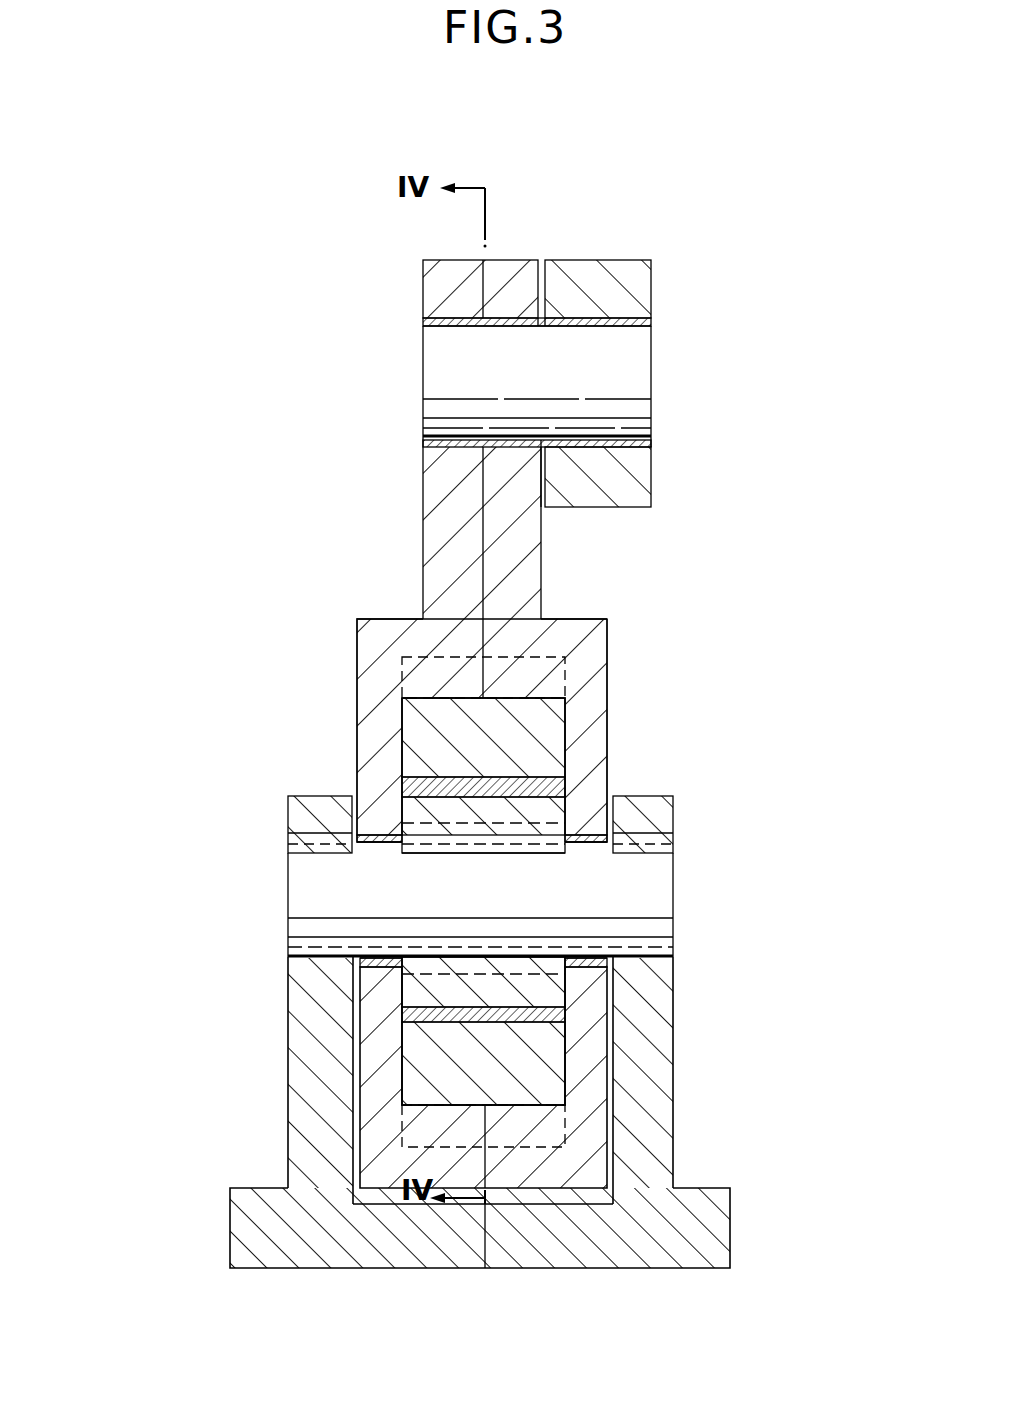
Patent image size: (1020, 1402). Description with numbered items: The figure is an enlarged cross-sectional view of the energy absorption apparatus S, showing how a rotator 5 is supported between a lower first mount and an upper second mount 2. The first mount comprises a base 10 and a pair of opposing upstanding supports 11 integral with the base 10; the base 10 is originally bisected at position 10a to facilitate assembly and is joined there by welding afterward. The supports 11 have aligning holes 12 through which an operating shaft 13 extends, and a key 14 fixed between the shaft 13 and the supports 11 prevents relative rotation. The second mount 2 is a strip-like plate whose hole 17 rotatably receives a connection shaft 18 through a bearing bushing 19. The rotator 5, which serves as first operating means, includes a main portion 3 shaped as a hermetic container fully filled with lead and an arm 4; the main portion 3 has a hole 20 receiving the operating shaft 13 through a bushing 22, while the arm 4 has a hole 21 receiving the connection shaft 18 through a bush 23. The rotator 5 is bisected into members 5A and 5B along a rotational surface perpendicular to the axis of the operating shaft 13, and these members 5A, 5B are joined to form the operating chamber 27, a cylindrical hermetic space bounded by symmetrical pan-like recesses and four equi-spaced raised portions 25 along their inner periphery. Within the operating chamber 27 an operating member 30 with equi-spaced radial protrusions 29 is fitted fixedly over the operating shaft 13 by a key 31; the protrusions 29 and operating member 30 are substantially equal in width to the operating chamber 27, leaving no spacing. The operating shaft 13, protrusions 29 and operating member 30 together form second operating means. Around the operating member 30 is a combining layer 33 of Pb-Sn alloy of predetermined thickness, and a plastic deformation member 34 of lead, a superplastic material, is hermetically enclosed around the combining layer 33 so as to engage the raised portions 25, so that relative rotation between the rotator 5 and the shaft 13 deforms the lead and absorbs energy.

The second mount 2 is at (660, 295).
The main portion 3 is at (373, 683).
The arm 4 is at (457, 572).
The rotator 5 is at (439, 644).
The member 5A is at (415, 477).
The member 5B is at (550, 578).
The base 10 is at (340, 1248).
The position 10a is at (485, 1240).
The upstanding supports 11 is at (653, 1070).
The holes 12 is at (305, 942).
The operating shaft 13 is at (300, 896).
The key 14 is at (300, 850).
The hole 17 is at (600, 418).
The connection shaft 18 is at (562, 388).
The bearing bushing 19 is at (600, 324).
The hole 20 is at (588, 842).
The hole 21 is at (450, 432).
The bushing 22 is at (380, 842).
The bush 23 is at (445, 328).
The raised portions 25 is at (452, 698).
The operating chamber 27 is at (726, 692).
The radial protrusions 29 is at (473, 790).
The operating member 30 is at (515, 975).
The key 31 is at (490, 838).
The combining layer 33 is at (555, 785).
The plastic deformation member 34 is at (540, 720).
The energy absorption apparatus S is at (766, 542).